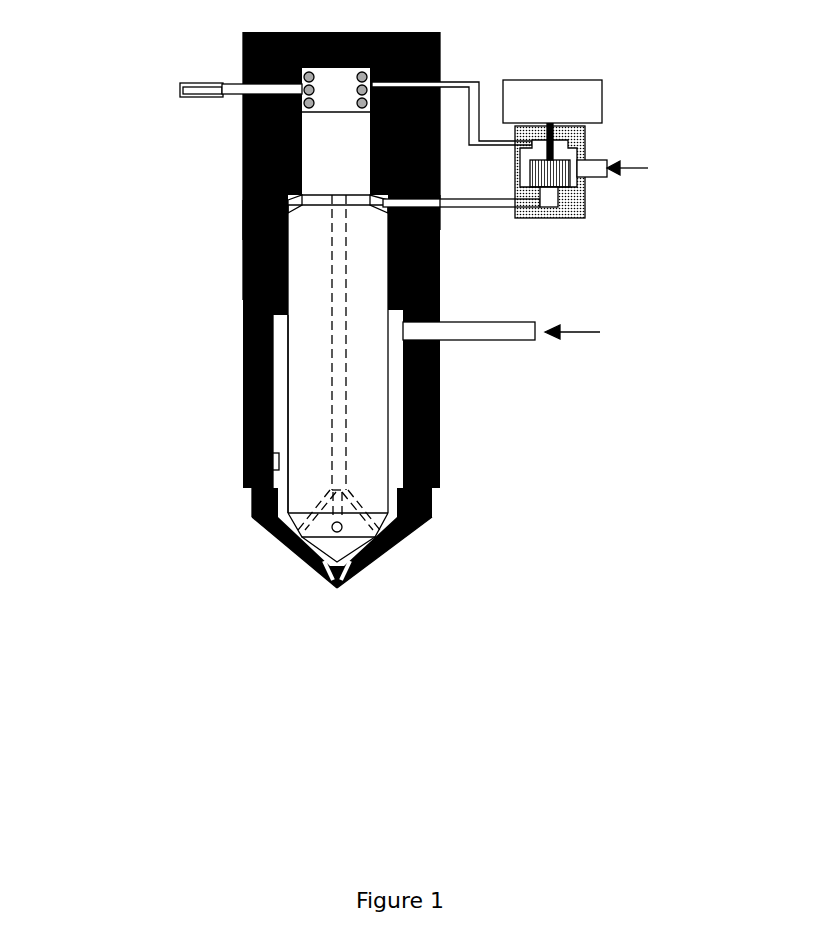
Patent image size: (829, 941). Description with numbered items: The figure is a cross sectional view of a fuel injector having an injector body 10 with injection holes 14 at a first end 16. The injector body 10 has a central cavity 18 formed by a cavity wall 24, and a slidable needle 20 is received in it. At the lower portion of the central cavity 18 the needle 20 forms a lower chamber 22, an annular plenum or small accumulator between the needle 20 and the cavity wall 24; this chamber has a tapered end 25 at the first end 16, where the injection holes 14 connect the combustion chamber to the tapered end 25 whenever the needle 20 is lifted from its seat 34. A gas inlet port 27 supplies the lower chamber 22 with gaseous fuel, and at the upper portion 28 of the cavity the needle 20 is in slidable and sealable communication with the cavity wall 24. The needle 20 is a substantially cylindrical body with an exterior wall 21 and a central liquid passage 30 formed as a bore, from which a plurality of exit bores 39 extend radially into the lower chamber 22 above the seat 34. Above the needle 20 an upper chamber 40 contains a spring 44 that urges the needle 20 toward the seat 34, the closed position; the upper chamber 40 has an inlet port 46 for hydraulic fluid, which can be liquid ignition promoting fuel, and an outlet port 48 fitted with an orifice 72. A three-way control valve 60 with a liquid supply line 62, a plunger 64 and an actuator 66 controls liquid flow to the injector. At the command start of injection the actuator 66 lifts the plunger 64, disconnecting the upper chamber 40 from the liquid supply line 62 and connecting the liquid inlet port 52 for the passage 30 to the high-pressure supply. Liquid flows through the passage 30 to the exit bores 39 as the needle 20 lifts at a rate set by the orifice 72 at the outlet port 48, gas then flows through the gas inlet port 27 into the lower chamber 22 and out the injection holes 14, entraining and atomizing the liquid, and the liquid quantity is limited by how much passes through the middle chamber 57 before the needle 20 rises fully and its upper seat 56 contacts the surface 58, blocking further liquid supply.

The injector body 10 is at (242, 285).
The injection holes 14 is at (317, 573).
The first end 16 is at (337, 595).
The central cavity 18 is at (280, 432).
The needle 20 is at (300, 388).
The exterior wall 21 is at (292, 420).
The lower chamber 22 is at (393, 507).
The cavity wall 24 is at (247, 480).
The tapered end 25 is at (260, 528).
The gas inlet port 27 is at (532, 332).
The upper portion 28 is at (242, 180).
The central liquid passage 30 is at (343, 430).
The seat 34 is at (390, 550).
The exit bores 39 is at (352, 490).
The upper chamber 40 is at (242, 135).
The spring 44 is at (438, 52).
The inlet port 46 is at (438, 80).
The outlet port 48 is at (178, 90).
The liquid inlet port 52 is at (485, 230).
The upper seat 56 is at (440, 218).
The middle chamber 57 is at (242, 220).
The surface 58 is at (440, 184).
The control valve 60 is at (573, 223).
The liquid supply line 62 is at (631, 174).
The plunger 64 is at (553, 172).
The actuator 66 is at (552, 90).
The orifice 72 is at (195, 82).